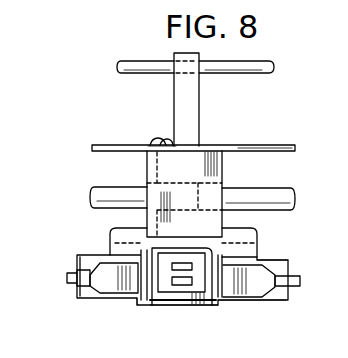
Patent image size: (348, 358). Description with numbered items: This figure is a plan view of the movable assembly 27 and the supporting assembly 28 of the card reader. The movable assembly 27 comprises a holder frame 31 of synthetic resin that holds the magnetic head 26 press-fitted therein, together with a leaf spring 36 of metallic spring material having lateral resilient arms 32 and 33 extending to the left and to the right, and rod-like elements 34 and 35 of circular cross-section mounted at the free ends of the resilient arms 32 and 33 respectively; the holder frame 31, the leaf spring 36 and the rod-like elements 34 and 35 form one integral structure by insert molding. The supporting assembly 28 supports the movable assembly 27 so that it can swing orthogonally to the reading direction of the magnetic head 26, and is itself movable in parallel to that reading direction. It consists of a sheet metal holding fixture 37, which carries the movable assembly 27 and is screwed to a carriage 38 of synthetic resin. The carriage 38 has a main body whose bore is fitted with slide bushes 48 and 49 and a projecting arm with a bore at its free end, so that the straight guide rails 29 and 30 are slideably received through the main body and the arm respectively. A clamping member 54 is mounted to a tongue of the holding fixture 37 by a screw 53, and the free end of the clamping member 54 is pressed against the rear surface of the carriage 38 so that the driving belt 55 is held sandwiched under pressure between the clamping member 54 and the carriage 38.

The magnetic head 26 is at (167, 283).
The movable assembly 27 is at (207, 315).
The supporting assembly 28 is at (256, 224).
The guide rail 29 is at (112, 205).
The guide rail 30 is at (133, 61).
The holder frame 31 is at (140, 303).
The resilient arm 32 is at (114, 292).
The resilient arm 33 is at (248, 298).
The rod-like element 34 is at (70, 284).
The rod-like element 35 is at (300, 283).
The leaf spring 36 is at (187, 306).
The holding fixture 37 is at (289, 262).
The carriage 38 is at (148, 152).
The slide bush 48 is at (232, 172).
The slide bush 49 is at (148, 168).
The screw 53 is at (160, 138).
The clamping member 54 is at (152, 140).
The driving belt 55 is at (240, 147).